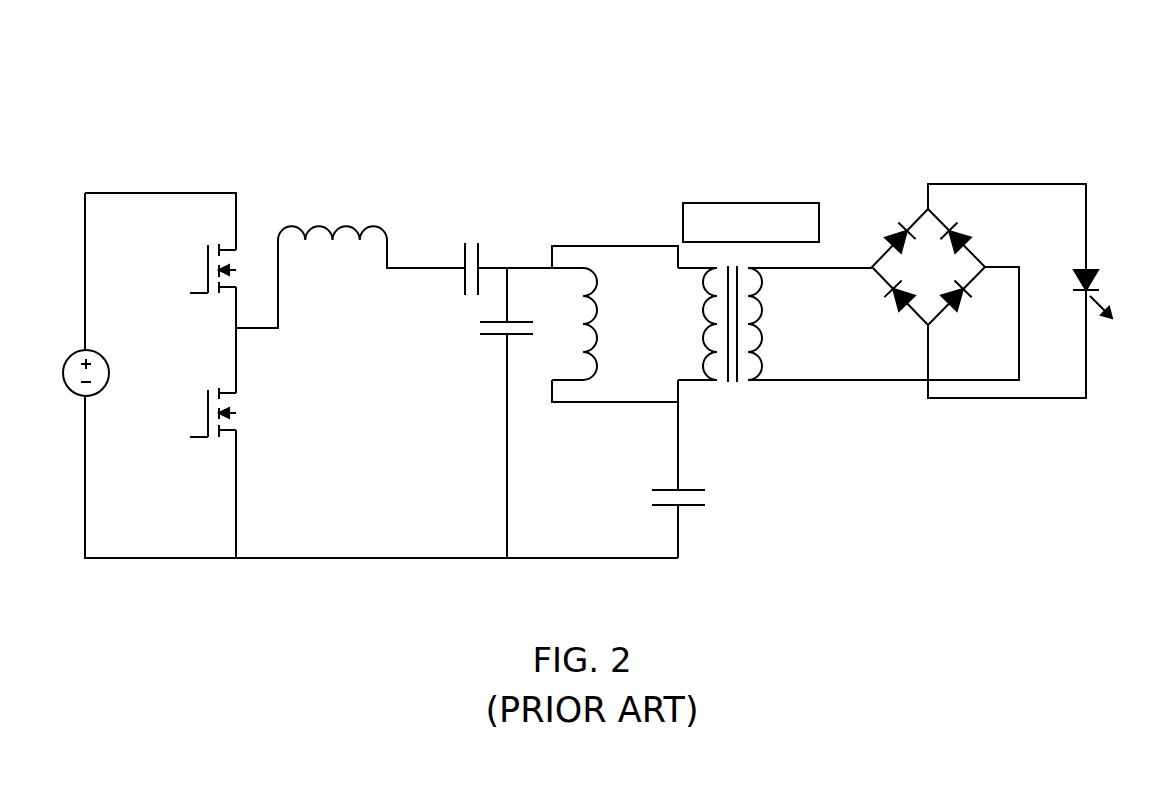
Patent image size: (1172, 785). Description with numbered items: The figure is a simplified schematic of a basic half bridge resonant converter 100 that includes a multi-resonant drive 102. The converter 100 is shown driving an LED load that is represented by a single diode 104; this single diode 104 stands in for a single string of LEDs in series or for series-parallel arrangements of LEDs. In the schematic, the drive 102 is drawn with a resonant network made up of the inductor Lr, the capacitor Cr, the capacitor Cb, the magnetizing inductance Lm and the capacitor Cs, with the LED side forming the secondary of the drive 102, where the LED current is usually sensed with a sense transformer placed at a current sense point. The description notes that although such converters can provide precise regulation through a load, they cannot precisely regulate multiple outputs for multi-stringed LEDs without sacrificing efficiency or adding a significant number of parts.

The half bridge resonant converter 100 is at (940, 90).
The multi-resonant drive 102 is at (652, 205).
The single diode 104 is at (1088, 268).
The resonant inductor Lr is at (318, 228).
The resonant capacitor Cr is at (465, 257).
The blocking capacitor Cb is at (490, 338).
The magnetizing inductance Lm is at (597, 338).
The series capacitor Cs is at (660, 490).